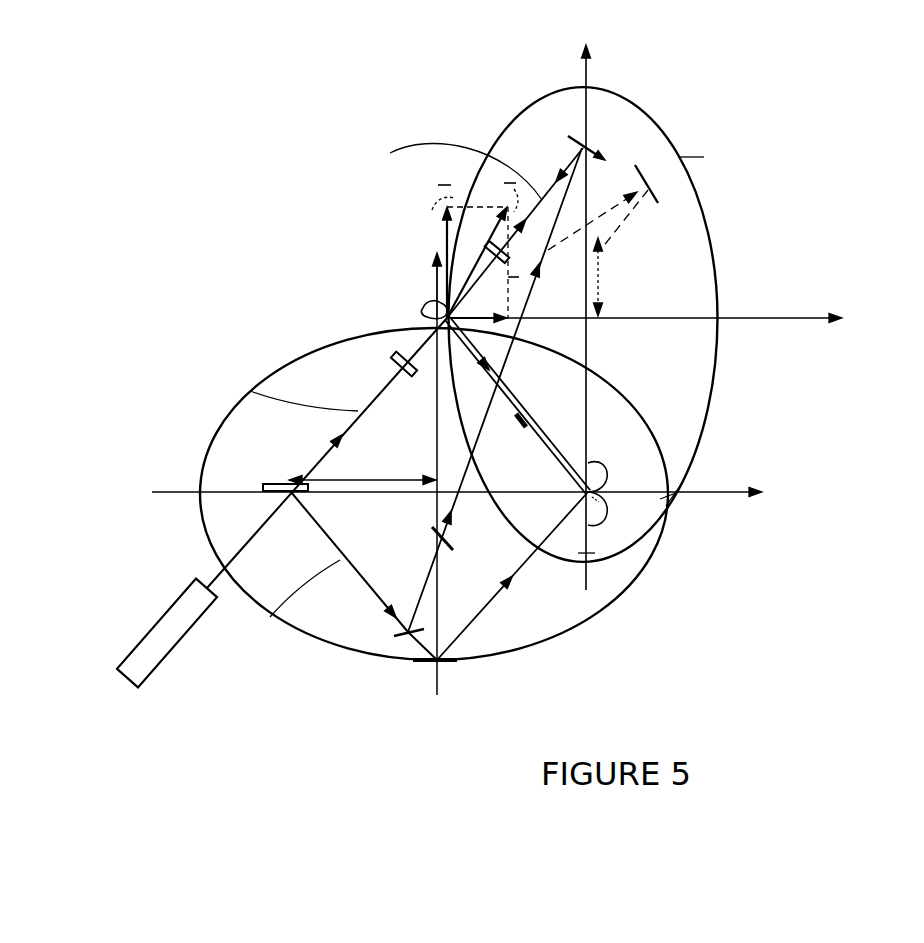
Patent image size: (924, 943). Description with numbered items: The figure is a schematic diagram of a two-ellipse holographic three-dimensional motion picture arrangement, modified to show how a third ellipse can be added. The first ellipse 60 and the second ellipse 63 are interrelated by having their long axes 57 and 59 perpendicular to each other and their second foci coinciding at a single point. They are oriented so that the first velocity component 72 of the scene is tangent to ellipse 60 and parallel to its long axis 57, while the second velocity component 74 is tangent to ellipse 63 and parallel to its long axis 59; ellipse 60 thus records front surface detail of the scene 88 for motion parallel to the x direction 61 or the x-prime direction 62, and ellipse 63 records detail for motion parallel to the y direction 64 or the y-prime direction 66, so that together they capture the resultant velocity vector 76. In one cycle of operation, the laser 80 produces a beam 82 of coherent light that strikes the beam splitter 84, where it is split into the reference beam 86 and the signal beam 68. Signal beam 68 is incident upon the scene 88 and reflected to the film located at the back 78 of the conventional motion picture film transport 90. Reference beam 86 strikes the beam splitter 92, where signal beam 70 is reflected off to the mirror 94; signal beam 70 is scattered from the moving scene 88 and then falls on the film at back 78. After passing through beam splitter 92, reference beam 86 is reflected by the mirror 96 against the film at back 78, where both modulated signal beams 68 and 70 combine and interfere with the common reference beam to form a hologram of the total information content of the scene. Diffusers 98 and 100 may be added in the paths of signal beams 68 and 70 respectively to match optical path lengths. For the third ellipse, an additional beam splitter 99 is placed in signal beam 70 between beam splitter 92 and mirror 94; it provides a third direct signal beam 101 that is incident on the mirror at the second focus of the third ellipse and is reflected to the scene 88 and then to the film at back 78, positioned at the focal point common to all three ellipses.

The long axis of ellipse 60 57 is at (183, 491).
The long axis of ellipse 63 59 is at (587, 570).
The ellipse No. 1 60 is at (305, 352).
The x direction 61 is at (714, 491).
The x' direction 62 is at (625, 317).
The ellipse No. 2 63 is at (583, 322).
The y direction 64 is at (437, 504).
The y' direction 66 is at (588, 428).
The signal beam 68 is at (310, 478).
The signal beam 70 is at (533, 292).
The velocity component V1 72 is at (457, 313).
The velocity component V2 74 is at (445, 242).
The resultant velocity vector V 76 is at (480, 176).
The camera back 78 is at (613, 486).
The laser 80 is at (183, 595).
The beam of coherent light 82 is at (260, 527).
The beam splitter 84 is at (288, 478).
The reference beam 86 is at (357, 567).
The scene 88 is at (433, 310).
The motion picture film transport 90 is at (611, 466).
The beam splitter 92 is at (406, 641).
The mirror 94 is at (593, 140).
The mirror 96 is at (443, 666).
The diffuser 98 is at (418, 372).
The additional beam splitter 99 is at (456, 537).
The diffuser 100 is at (507, 251).
The third direct signal beam 101 is at (603, 267).